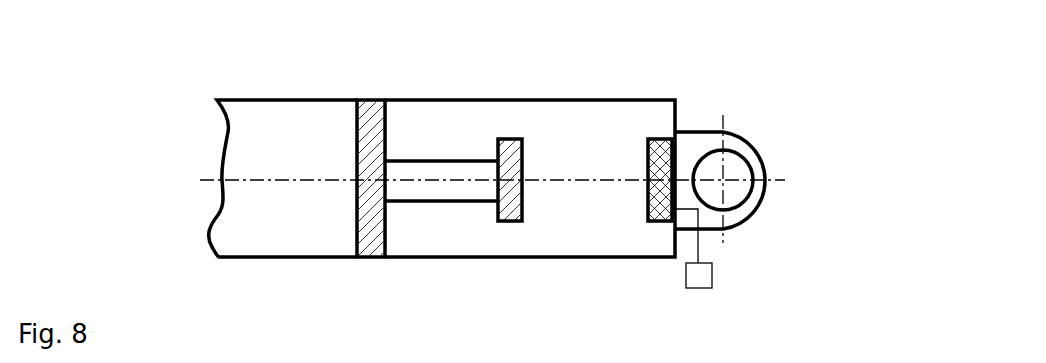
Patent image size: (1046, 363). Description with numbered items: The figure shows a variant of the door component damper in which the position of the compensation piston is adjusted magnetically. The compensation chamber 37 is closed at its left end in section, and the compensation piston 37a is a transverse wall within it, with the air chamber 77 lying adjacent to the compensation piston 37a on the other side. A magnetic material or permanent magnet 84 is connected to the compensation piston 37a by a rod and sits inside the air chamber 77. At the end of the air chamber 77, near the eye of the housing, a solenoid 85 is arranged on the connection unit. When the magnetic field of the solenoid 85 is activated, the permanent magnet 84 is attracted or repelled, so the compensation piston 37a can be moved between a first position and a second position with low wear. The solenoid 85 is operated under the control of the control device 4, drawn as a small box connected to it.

The compensation chamber 37 is at (297, 122).
The compensation piston 37a is at (373, 115).
The air chamber 77 is at (575, 238).
The permanent magnet 84 is at (510, 155).
The solenoid 85 is at (657, 145).
The control device 4 is at (702, 278).